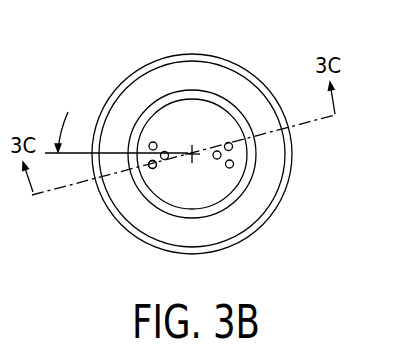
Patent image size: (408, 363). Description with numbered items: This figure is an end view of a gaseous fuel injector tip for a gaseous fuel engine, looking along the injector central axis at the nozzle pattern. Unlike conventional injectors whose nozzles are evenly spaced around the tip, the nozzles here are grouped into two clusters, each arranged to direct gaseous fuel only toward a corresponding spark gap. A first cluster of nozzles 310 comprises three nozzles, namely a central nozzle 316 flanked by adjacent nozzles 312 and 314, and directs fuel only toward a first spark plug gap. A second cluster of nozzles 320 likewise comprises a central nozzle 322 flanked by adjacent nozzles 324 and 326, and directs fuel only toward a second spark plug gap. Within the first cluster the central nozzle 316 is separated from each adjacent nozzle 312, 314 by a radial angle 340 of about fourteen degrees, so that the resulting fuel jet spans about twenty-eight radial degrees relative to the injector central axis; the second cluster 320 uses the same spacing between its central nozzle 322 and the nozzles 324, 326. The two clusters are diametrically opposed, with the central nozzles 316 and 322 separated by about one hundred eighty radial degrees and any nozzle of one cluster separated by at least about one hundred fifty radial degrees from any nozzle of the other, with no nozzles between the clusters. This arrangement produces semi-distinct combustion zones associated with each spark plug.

The first cluster of nozzles 310 is at (148, 133).
The nozzle 312 is at (144, 174).
The nozzle 314 is at (153, 169).
The central nozzle 316 is at (165, 160).
The second cluster of nozzles 320 is at (256, 173).
The central nozzle 322 is at (214, 143).
The nozzle 324 is at (232, 135).
The nozzle 326 is at (239, 155).
The radial angle 340 is at (60, 199).